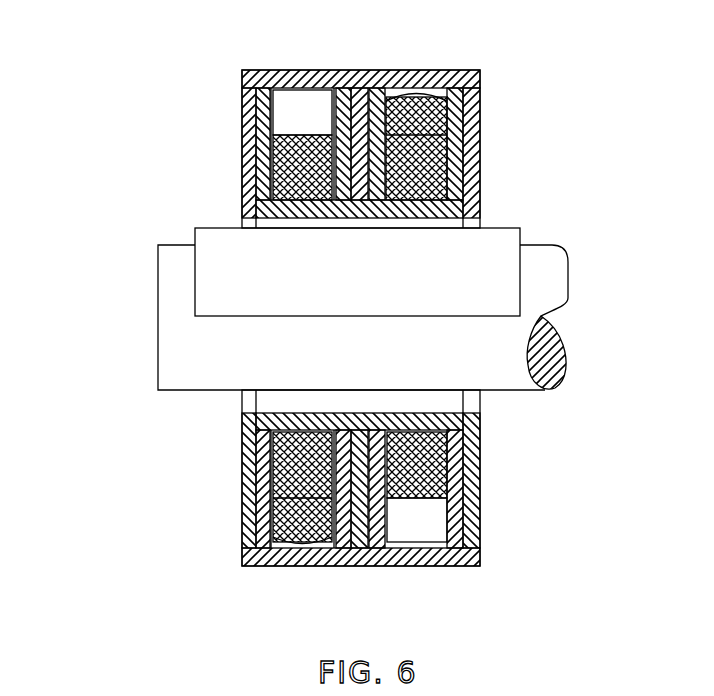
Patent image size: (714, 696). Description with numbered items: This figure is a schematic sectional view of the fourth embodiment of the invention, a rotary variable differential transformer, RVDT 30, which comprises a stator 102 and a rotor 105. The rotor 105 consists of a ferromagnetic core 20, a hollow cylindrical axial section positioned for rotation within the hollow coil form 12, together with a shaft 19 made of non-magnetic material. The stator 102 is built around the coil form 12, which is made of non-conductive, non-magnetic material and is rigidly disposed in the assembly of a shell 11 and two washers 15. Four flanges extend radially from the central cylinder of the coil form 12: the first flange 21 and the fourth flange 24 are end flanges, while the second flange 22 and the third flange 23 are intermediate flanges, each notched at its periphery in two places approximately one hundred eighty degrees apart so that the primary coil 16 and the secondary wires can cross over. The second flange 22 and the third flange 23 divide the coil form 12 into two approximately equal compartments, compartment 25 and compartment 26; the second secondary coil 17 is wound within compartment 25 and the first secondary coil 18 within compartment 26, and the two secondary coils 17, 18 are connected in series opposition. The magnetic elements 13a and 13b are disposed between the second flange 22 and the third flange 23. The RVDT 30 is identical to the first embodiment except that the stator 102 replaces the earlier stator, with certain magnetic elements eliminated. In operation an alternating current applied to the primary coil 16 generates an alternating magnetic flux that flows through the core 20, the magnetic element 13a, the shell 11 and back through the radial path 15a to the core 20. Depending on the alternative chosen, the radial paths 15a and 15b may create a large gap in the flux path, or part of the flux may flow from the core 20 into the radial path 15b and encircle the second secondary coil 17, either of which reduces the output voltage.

The shell 11 is at (463, 70).
The coil form 12 is at (480, 418).
The magnetic element 13a is at (357, 88).
The magnetic element 13b is at (358, 546).
The washer 15 is at (480, 148).
The radial path 15a is at (467, 127).
The radial path 15b is at (248, 437).
The primary coil 16 is at (422, 92).
The second secondary coil 17 is at (250, 495).
The first secondary coil 18 is at (467, 190).
The shaft 19 is at (170, 278).
The ferromagnetic core 20 is at (210, 240).
The first flange 21 is at (457, 545).
The second flange 22 is at (377, 535).
The third flange 23 is at (345, 88).
The fourth flange 24 is at (271, 85).
The compartment 25 is at (262, 131).
The compartment 26 is at (432, 534).
The RVDT 30 is at (535, 210).
The stator 102 is at (227, 193).
The rotor 105 is at (152, 343).